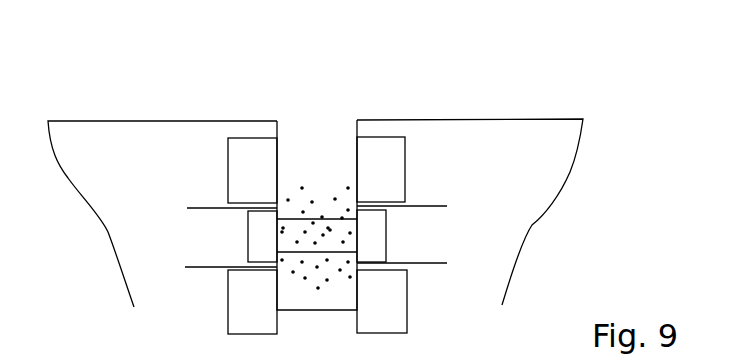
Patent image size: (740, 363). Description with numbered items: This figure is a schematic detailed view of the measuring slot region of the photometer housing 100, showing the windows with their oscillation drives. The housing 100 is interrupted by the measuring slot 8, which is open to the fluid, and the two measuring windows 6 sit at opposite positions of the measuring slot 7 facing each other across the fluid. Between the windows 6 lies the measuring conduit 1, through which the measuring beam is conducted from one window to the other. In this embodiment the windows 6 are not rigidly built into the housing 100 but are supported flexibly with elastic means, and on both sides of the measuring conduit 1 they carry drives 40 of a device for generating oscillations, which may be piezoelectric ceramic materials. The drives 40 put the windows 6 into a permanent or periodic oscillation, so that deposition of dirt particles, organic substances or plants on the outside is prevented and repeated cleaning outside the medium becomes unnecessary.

The housing 100 is at (191, 121).
The measuring slot 8 is at (357, 138).
The measuring conduit 1 is at (203, 220).
The measuring slot 7 is at (323, 227).
The drives 40 is at (266, 176).
The measuring windows 6 is at (270, 248).